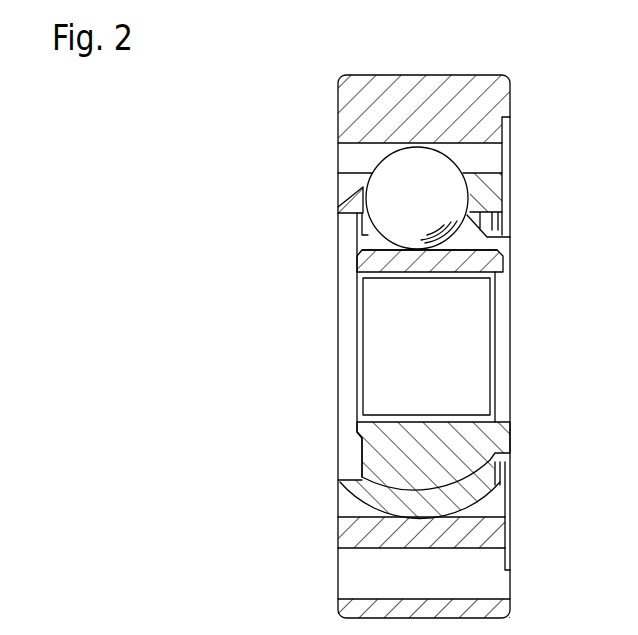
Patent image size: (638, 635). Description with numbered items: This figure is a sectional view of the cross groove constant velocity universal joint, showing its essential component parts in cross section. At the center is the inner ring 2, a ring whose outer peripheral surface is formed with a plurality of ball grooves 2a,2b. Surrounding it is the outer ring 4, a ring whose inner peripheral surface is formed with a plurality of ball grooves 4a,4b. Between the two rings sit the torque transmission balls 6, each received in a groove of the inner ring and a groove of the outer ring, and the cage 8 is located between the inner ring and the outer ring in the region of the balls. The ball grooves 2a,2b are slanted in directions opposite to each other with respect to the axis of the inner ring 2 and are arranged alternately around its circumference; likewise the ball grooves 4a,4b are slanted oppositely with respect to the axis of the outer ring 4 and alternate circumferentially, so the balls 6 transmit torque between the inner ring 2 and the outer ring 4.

The inner ring 2 is at (488, 266).
The ball grooves 2a,2b is at (368, 238).
The outer ring 4 is at (457, 88).
The ball grooves 4a,4b is at (488, 158).
The torque transmission balls 6 is at (392, 170).
The cage 8 is at (488, 193).